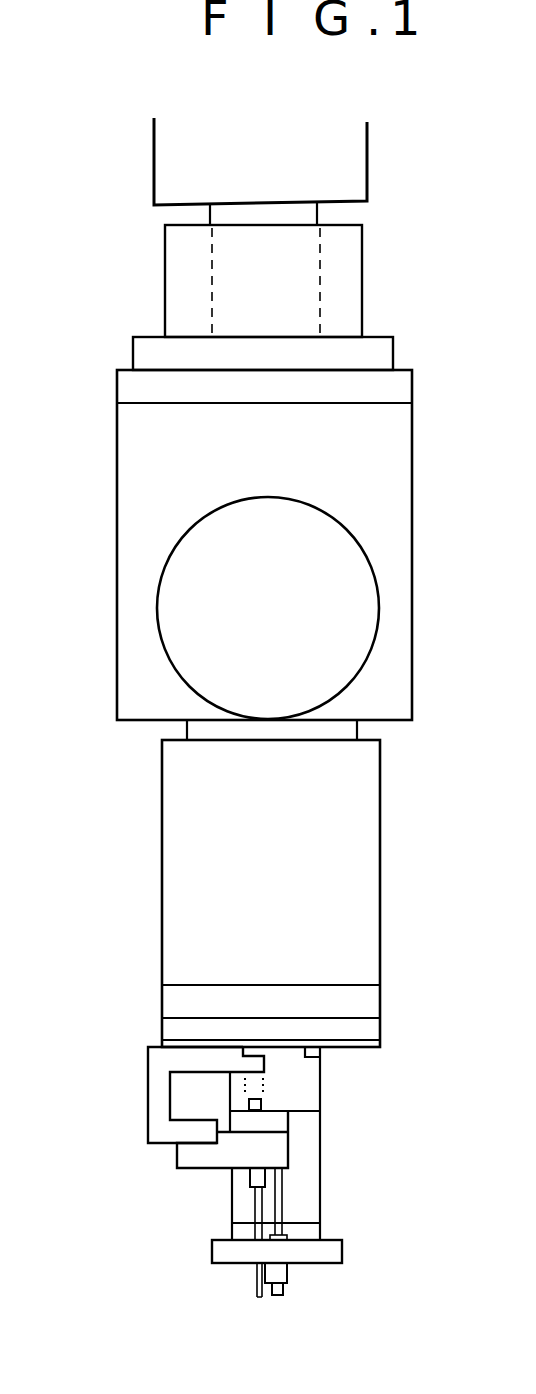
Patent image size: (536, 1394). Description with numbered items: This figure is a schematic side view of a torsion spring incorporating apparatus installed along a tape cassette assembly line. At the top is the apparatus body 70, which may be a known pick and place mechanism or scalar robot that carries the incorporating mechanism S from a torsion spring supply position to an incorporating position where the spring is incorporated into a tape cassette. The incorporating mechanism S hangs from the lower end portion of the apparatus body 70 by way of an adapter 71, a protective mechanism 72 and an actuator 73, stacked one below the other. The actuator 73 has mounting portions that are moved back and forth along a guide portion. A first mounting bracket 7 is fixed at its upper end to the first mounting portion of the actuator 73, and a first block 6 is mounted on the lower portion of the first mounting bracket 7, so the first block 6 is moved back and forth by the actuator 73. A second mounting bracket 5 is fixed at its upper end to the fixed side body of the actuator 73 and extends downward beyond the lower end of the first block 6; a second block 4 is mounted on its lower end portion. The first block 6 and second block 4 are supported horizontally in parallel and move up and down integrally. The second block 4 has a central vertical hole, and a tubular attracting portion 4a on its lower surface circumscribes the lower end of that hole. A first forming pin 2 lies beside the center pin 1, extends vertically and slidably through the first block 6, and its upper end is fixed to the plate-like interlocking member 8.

The apparatus body 70 is at (376, 166).
The adapter 71 is at (363, 295).
The protective mechanism 72 is at (403, 627).
The actuator 73 is at (370, 853).
The first mounting bracket 7 is at (155, 1082).
The interlocking member 8 is at (277, 1118).
The first block 6 is at (190, 1163).
The second mounting bracket 5 is at (305, 1190).
The second block 4 is at (218, 1252).
The tubular attracting portion 4a is at (287, 1278).
The first forming pin 2 is at (255, 1290).
The center pin 1 is at (278, 1297).
The incorporating mechanism S is at (379, 1130).